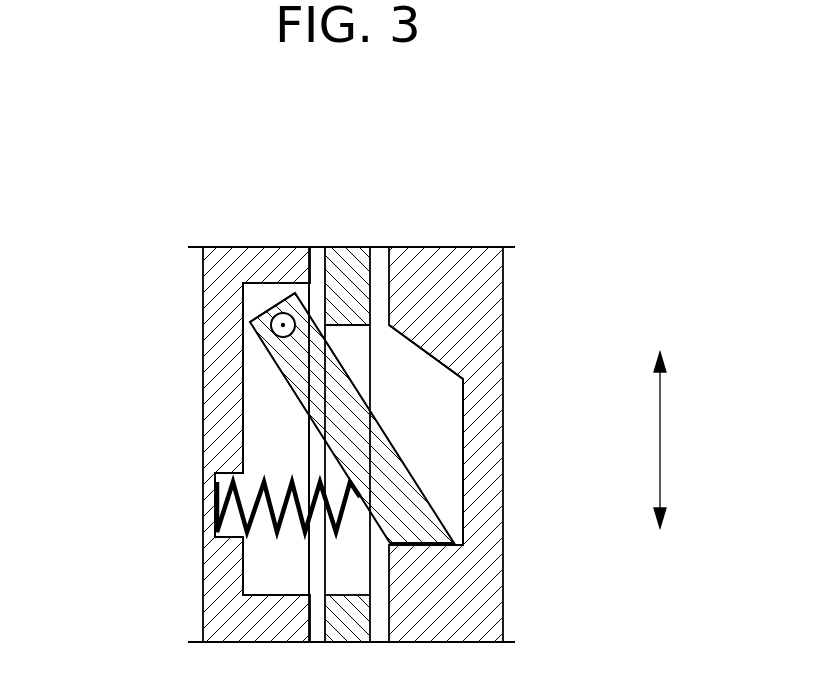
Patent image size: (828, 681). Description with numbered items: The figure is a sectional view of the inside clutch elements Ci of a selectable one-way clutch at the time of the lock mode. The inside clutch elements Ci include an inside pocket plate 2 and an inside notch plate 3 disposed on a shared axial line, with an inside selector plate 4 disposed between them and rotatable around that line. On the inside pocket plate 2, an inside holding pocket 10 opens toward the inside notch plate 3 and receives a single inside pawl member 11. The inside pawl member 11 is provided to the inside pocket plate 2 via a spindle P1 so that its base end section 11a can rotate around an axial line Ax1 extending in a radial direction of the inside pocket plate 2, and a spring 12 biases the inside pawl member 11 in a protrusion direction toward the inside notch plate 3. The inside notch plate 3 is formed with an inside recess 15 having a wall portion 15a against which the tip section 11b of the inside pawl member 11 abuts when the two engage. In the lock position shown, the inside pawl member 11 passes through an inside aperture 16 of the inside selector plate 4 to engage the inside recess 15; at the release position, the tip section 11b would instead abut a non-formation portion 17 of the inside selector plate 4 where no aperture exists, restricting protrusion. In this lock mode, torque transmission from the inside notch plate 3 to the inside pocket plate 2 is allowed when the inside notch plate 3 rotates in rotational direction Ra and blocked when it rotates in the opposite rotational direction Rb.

The inside pocket plate 2 is at (215, 322).
The inside notch plate 3 is at (448, 256).
The inside selector plate 4 is at (353, 263).
The inside holding pocket 10 is at (268, 398).
The inside pawl member 11 is at (360, 450).
The base end section 11a is at (278, 318).
The tip section 11b is at (420, 546).
The spring 12 is at (260, 483).
The inside recess 15 is at (425, 387).
The wall portion 15a is at (437, 533).
The inside aperture 16 is at (352, 363).
The non-formation portion 17 is at (350, 298).
The spindle P1 is at (288, 325).
The axial line Ax1 is at (280, 315).
The inside clutch elements Ci is at (437, 155).
The rotational direction Ra is at (661, 379).
The rotational direction Rb is at (659, 503).